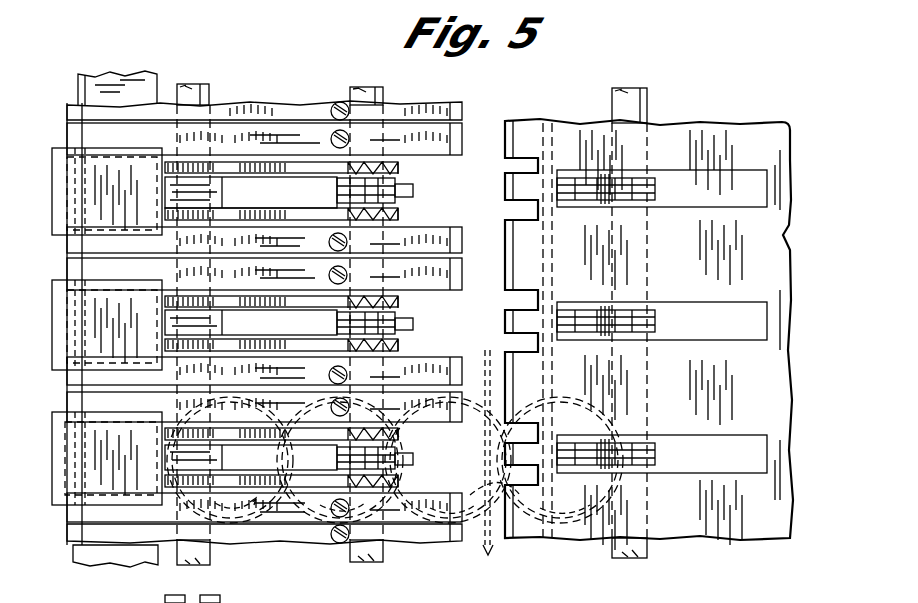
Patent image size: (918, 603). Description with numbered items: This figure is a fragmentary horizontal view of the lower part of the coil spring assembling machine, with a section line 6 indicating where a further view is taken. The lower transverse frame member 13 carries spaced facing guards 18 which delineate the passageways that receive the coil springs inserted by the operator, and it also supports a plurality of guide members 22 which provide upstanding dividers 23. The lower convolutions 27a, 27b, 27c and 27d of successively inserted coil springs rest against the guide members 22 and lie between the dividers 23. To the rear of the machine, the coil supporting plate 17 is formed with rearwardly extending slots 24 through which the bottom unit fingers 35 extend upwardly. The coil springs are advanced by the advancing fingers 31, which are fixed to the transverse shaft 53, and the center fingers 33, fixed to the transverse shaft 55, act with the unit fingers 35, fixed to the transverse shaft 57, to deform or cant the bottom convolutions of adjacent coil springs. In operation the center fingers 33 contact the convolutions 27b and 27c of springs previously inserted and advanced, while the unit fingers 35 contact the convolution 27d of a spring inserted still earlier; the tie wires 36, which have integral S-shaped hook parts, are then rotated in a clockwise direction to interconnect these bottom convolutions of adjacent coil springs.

The transverse frame member 13 is at (105, 85).
The transverse shaft 53 is at (195, 88).
The advancing finger 31 is at (298, 205).
The transverse shaft 55 is at (366, 98).
The transverse shaft 57 is at (632, 95).
The rearwardly extending slot 24 is at (732, 170).
The facing guard 18 is at (55, 165).
The upstanding divider 23 is at (238, 255).
The guide member 22 is at (418, 232).
The center finger 33 is at (413, 190).
The coil supporting plate 17 is at (768, 262).
The unit finger 35 is at (640, 318).
The lower convolution 27a is at (258, 520).
The lower convolution 27b is at (292, 525).
The lower convolution 27c is at (408, 535).
The lower convolution 27d is at (618, 402).
The tie wire 36 is at (482, 528).
The section line 6- 6 is at (35, 456).